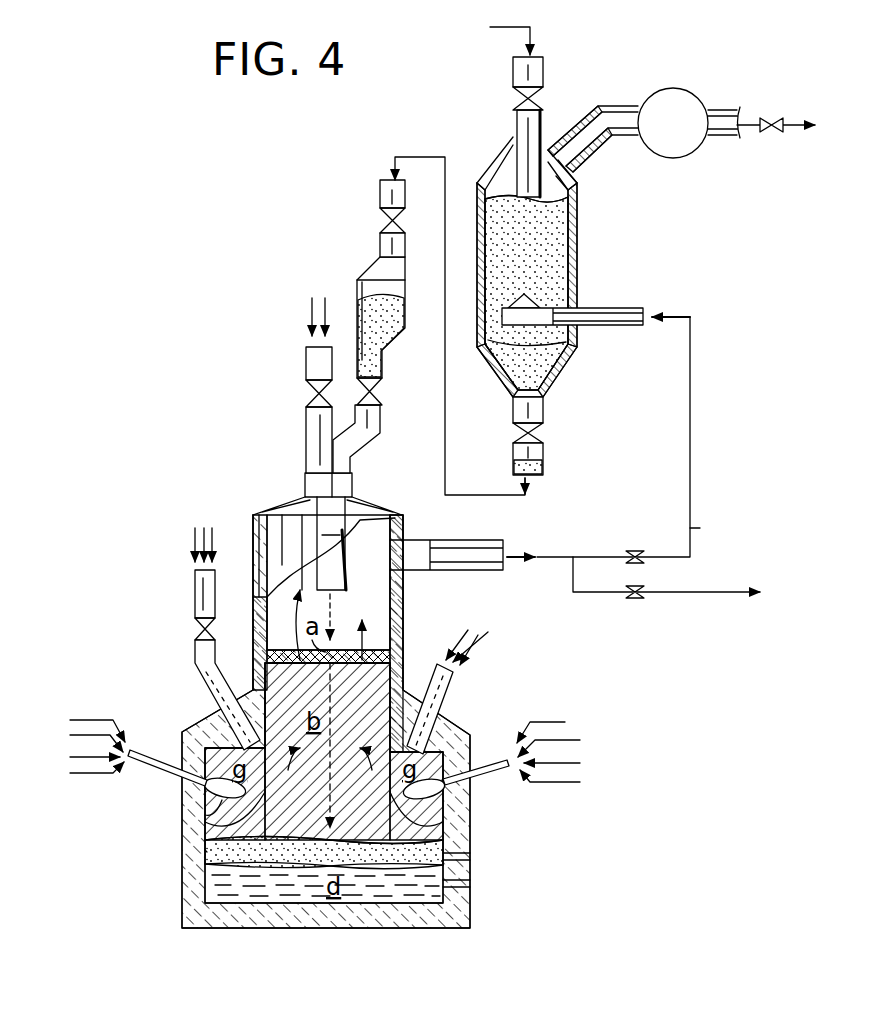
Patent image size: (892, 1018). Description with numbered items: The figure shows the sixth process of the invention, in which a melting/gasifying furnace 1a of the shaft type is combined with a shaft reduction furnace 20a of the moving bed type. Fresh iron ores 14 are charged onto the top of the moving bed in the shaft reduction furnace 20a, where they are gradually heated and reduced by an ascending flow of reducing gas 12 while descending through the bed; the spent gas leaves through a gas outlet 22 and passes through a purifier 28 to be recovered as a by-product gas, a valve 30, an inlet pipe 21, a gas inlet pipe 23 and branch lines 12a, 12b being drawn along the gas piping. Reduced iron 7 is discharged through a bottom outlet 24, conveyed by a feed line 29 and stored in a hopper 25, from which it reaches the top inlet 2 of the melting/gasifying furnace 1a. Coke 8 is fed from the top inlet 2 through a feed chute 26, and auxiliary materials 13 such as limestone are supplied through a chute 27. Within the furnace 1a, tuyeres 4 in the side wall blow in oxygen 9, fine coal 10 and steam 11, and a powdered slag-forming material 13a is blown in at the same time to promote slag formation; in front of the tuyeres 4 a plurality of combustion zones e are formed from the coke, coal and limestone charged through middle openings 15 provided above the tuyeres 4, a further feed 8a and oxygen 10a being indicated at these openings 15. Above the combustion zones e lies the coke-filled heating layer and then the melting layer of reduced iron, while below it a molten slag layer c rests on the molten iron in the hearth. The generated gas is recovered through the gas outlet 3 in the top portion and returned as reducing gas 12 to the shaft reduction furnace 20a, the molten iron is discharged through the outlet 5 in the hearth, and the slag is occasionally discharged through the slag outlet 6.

The melting/gasifying furnace 1a is at (470, 722).
The top inlet 2 is at (305, 487).
The gas outlet 3 is at (458, 545).
The tuyeres 4 is at (140, 753).
The molten iron outlet 5 is at (470, 884).
The slag outlet 6 is at (470, 857).
The reduced iron 7 is at (392, 164).
The coke 8 is at (312, 316).
The ore feed 8a is at (195, 545).
The oxygen 9 is at (93, 735).
The fine coal 10 is at (70, 720).
The oxygen feed 10a is at (212, 528).
The steam 11 is at (70, 757).
The reducing gas 12 is at (522, 555).
The gas branch 12a is at (700, 528).
The gas branch 12b is at (705, 594).
The auxiliary materials 13 is at (204, 528).
The slag-forming material 13a is at (95, 773).
The fresh iron ores 14 is at (498, 35).
The middle openings 15 is at (196, 672).
The shaft reduction furnace 20a is at (582, 240).
The inlet pipe 21 is at (520, 170).
The gas outlet 22 is at (590, 152).
The gas inlet pipe 23 is at (618, 308).
The bottom outlet 24 is at (546, 412).
The hopper 25 is at (357, 296).
The feed chute 26 is at (368, 445).
The chute 27 is at (307, 448).
The purifier 28 is at (676, 88).
The feed line 29 is at (412, 157).
The valve 30 is at (748, 128).
The combustion zones e is at (208, 805).
The molten slag layer c is at (206, 852).